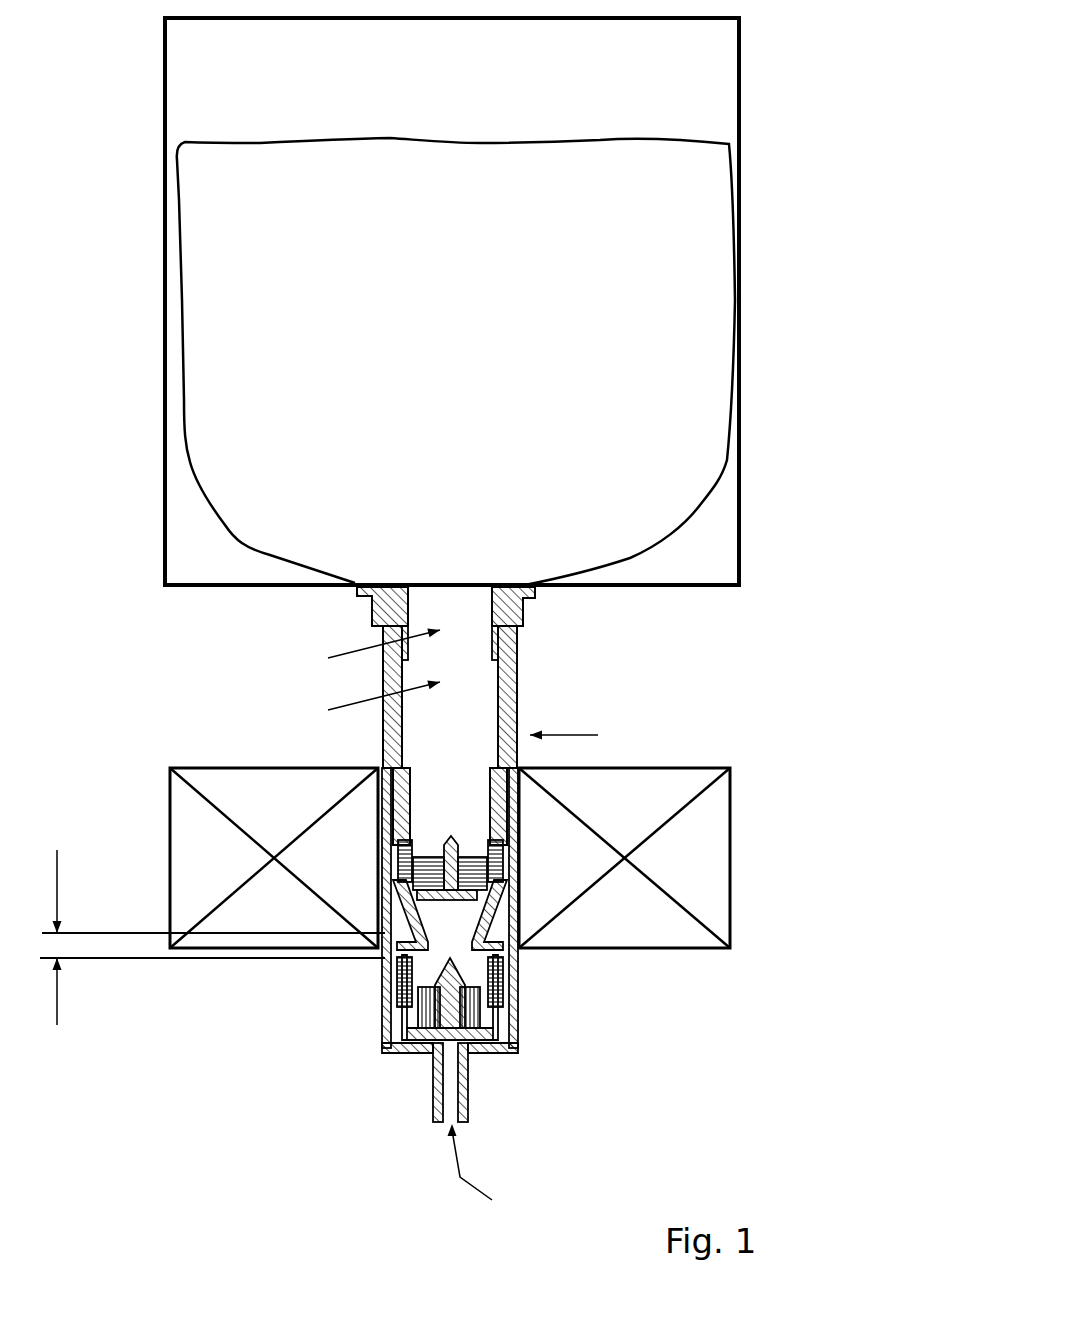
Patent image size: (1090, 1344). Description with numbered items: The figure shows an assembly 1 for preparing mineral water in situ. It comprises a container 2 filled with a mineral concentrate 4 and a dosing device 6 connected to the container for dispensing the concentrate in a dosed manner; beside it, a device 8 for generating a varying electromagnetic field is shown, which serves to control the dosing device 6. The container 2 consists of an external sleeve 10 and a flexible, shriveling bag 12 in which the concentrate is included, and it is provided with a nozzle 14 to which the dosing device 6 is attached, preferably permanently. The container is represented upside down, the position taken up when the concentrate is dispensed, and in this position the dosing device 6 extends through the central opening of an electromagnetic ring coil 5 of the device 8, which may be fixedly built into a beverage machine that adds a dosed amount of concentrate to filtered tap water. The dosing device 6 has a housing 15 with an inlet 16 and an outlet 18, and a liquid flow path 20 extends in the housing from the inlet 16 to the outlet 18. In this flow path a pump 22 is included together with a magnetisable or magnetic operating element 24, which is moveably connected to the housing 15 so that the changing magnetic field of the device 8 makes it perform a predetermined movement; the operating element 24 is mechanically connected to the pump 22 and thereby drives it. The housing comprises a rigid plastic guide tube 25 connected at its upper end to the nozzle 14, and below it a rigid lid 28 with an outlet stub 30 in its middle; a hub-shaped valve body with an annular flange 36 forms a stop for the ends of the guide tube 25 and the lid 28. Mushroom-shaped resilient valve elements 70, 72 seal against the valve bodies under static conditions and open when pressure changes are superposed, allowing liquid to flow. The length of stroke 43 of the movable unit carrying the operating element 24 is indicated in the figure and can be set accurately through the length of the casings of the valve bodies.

The assembly 1 is at (800, 638).
The container 2 is at (752, 536).
The mineral concentrate 4 is at (464, 434).
The electromagnetic ring coil 5 is at (742, 828).
The dosing device 6 is at (573, 735).
The device for generating a varying electromagnetic field 8 is at (740, 884).
The external sleeve 10 is at (742, 30).
The flexible, shriveling bag 12 is at (705, 243).
The nozzle 14 is at (505, 612).
The housing 15 is at (508, 690).
The inlet 16 is at (368, 652).
The outlet 18 is at (491, 1174).
The liquid flow path 20 is at (368, 704).
The pump 22 is at (385, 982).
The operating element 24 is at (495, 768).
The guide tube 25 is at (512, 654).
The lid 28 is at (518, 1048).
The outlet stub 30 is at (433, 1113).
The annular flange 36 is at (470, 953).
The length of stroke 43 is at (201, 937).
The valve element 70 is at (450, 838).
The valve element 72 is at (457, 968).